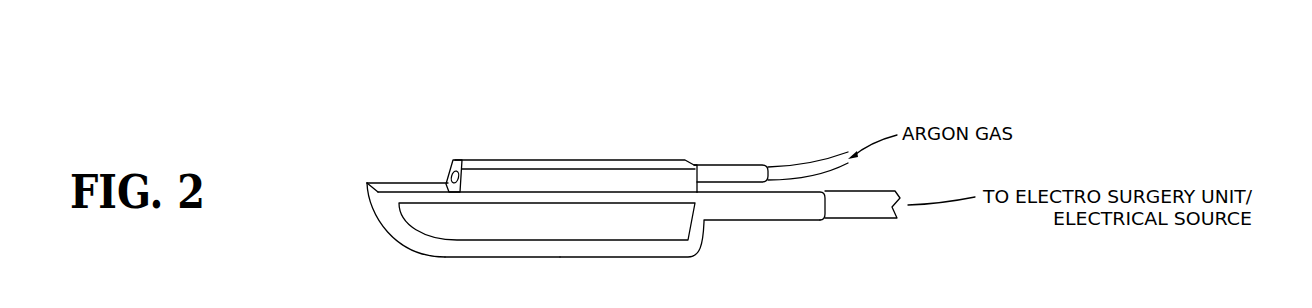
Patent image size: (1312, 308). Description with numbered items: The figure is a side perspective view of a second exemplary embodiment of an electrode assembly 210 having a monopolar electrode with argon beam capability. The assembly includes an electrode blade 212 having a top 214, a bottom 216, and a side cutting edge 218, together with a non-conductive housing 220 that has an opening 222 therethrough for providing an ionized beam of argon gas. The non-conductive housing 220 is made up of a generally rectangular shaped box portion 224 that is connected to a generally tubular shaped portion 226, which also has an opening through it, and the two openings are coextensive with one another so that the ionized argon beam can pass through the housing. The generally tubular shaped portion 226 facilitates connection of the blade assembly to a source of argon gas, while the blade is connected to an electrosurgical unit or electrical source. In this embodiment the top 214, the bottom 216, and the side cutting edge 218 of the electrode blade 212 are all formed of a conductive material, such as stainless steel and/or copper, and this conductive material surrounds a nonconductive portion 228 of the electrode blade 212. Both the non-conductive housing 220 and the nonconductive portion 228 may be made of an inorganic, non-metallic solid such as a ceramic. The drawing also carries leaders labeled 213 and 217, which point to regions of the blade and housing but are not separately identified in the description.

The electrosurgical device 210 is at (814, 90).
The electrode blade 212 is at (713, 218).
The insulating wall 213 is at (583, 198).
The top 214 is at (383, 178).
The bottom 216 is at (593, 257).
The curved housing portion 217 is at (420, 247).
The side cutting edge 218 is at (382, 231).
The non-conductive housing 220 is at (669, 152).
The opening 222 is at (462, 163).
The generally rectangular shaped box portion 224 is at (515, 178).
The generally tubular shaped portion 226 is at (735, 164).
The nonconductive portion 228 is at (508, 222).